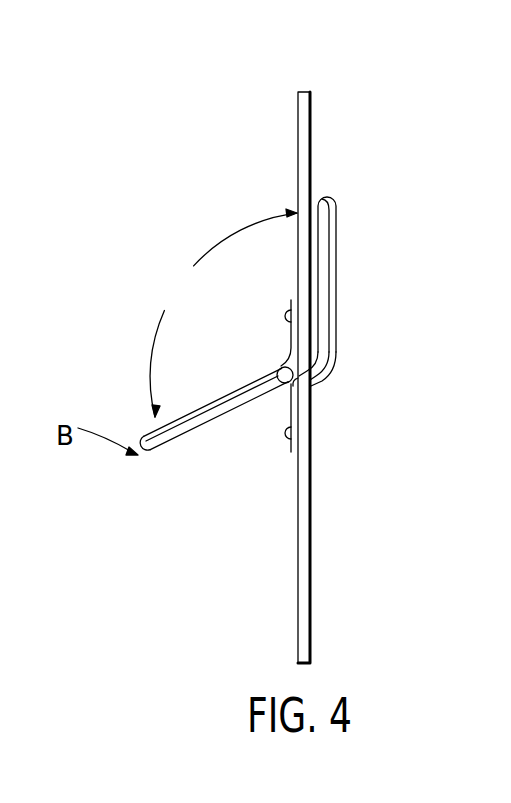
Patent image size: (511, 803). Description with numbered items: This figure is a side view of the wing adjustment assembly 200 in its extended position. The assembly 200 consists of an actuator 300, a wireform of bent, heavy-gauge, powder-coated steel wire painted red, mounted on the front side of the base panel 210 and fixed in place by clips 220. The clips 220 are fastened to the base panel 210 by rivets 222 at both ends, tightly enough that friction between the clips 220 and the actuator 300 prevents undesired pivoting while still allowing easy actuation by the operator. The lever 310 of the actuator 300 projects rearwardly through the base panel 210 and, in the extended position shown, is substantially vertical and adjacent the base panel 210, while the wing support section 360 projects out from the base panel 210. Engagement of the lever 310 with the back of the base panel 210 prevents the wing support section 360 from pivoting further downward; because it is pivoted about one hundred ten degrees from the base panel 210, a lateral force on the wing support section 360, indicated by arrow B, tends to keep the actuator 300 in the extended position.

The wing adjustment assembly 200 is at (183, 258).
The base panel 210 is at (312, 92).
The clips 220 is at (292, 449).
The rivets 222 is at (285, 316).
The actuator 300 is at (337, 308).
The lever 310 is at (332, 203).
The wing support section 360 is at (172, 444).